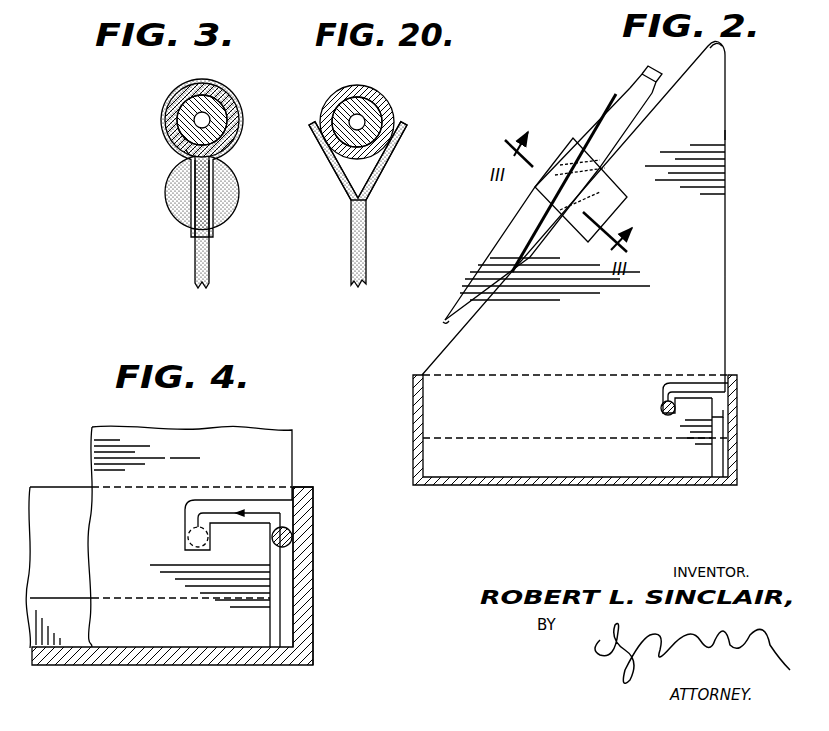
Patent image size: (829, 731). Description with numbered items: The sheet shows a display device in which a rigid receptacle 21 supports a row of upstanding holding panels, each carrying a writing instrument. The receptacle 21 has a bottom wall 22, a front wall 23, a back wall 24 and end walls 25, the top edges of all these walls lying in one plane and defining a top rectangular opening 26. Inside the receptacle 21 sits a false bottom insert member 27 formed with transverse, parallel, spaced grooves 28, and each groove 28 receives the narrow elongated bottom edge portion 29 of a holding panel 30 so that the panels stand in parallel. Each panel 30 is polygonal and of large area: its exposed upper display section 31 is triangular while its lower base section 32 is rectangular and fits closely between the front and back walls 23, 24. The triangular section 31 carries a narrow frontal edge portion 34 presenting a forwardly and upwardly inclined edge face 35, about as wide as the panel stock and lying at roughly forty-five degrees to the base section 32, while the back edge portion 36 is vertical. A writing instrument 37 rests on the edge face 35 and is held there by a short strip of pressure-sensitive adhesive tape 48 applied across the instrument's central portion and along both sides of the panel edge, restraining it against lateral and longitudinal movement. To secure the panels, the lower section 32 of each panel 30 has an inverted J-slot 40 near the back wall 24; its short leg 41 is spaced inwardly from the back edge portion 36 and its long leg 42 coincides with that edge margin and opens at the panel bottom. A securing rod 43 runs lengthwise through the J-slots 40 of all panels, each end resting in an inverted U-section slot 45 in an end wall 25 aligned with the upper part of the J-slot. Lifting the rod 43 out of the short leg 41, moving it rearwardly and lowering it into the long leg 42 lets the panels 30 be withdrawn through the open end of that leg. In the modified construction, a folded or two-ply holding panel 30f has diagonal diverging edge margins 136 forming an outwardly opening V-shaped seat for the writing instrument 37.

In FIG. 2, the receptacle 21 is at (452, 492).
In FIG. 4, the bottom wall 22 is at (215, 658).
In FIG. 2, the bottom wall 22 is at (565, 478).
In FIG. 2, the front wall 23 is at (412, 400).
In FIG. 4, the back wall 24 is at (313, 610).
In FIG. 2, the back wall 24 is at (737, 430).
In FIG. 2, the end walls 25 is at (595, 375).
In FIG. 2, the top rectangular opening 26 is at (425, 380).
In FIG. 4, the false bottom insert member 27 is at (65, 598).
In FIG. 2, the false bottom insert member 27 is at (440, 438).
In FIG. 4, the grooves 28 is at (66, 630).
In FIG. 2, the grooves 28 is at (722, 465).
In FIG. 4, the bottom edge portion 29 is at (142, 647).
In FIG. 2, the bottom edge portion 29 is at (500, 478).
In FIG. 3, the holding panel 30 is at (195, 256).
In FIG. 4, the holding panel 30 is at (162, 456).
In FIG. 2, the holding panel 30 is at (729, 232).
In FIG. 20, the holding panel 30f is at (355, 250).
In FIG. 2, the upper display section 31 is at (683, 281).
In FIG. 2, the lower base section 32 is at (610, 458).
In FIG. 2, the frontal edge portion 34 is at (712, 73).
In FIG. 3, the edge face 35 is at (190, 152).
In FIG. 2, the edge face 35 is at (480, 293).
In FIG. 2, the back edge portion 36 is at (725, 133).
In FIG. 3, the writing instrument 37 is at (178, 100).
In FIG. 20, the writing instrument 37 is at (383, 96).
In FIG. 2, the writing instrument 37 is at (612, 108).
In FIG. 4, the inverted J-slot 40 is at (252, 505).
In FIG. 2, the inverted J-slot 40 is at (698, 392).
In FIG. 4, the short leg 41 is at (184, 543).
In FIG. 2, the short leg 41 is at (662, 388).
In FIG. 4, the long leg 42 is at (273, 588).
In FIG. 2, the long leg 42 is at (713, 455).
In FIG. 4, the securing rod 43 is at (283, 537).
In FIG. 2, the securing rod 43 is at (663, 411).
In FIG. 2, the U-section slot 45 is at (720, 410).
In FIG. 3, the adhesive tape 48 is at (212, 83).
In FIG. 2, the adhesive tape 48 is at (558, 157).
In FIG. 20, the edge margins 136 is at (325, 161).